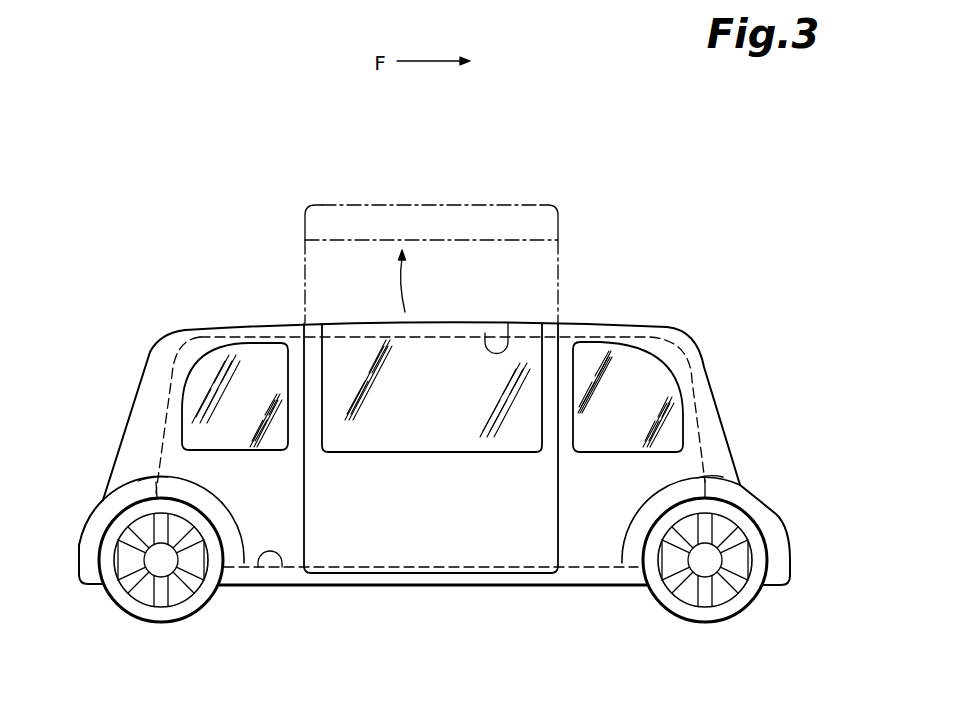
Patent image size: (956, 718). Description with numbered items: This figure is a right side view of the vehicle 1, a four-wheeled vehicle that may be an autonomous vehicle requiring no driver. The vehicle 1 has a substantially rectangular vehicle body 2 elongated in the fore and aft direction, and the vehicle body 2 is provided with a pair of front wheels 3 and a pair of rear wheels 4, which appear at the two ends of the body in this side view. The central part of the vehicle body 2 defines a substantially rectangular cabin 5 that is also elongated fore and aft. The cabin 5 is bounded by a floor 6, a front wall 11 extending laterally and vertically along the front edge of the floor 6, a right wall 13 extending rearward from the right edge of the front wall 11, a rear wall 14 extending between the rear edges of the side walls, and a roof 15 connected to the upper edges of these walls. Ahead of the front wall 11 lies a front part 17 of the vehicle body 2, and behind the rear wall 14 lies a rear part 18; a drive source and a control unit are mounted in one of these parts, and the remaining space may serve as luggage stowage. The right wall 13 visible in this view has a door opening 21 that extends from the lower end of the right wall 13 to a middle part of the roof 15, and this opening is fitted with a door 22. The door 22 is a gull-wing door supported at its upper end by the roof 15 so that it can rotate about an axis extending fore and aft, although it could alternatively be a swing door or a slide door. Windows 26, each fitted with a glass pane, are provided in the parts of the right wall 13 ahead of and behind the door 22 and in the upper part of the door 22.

The vehicle 1 is at (662, 234).
The vehicle body 2 is at (703, 331).
The front wheels 3 is at (722, 612).
The rear wheels 4 is at (178, 613).
The cabin 5 is at (508, 323).
The floor 6 is at (258, 567).
The front wall 11 is at (725, 418).
The right wall 13 is at (592, 537).
The rear wall 14 is at (141, 379).
The roof 15 is at (442, 322).
The front part 17 is at (767, 515).
The rear part 18 is at (94, 522).
The door opening 21 is at (307, 513).
The door 22 is at (425, 205).
The windows 26 is at (261, 362).